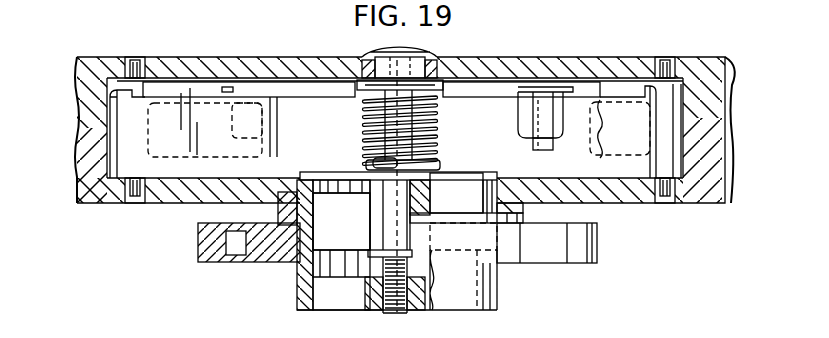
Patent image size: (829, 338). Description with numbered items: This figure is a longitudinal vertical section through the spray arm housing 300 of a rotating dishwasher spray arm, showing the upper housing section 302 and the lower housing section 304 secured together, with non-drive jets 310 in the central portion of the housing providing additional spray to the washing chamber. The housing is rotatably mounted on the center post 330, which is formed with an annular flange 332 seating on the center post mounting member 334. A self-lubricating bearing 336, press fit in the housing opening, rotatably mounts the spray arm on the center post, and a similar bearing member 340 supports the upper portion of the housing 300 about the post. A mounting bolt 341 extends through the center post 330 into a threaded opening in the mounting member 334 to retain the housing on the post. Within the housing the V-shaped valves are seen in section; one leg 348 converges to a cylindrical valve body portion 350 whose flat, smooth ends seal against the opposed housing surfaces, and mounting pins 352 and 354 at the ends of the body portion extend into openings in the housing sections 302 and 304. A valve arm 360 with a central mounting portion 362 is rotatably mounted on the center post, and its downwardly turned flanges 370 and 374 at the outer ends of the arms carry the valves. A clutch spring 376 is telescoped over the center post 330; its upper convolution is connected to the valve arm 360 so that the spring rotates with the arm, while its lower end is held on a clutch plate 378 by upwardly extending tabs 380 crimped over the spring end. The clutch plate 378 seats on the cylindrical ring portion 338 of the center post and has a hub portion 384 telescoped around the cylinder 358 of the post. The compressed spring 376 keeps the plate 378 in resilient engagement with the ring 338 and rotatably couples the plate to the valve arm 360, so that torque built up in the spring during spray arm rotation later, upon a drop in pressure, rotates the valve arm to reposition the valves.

The spray arm housing 300 is at (504, 45).
The upper housing section 302 is at (103, 57).
The lower housing section 304 is at (78, 198).
The non-drive jets 310 is at (293, 57).
The center post 330 is at (370, 212).
The annular flange 332 is at (277, 211).
The center post mounting member 334 is at (215, 263).
The self-lubricating bearing 336 is at (297, 178).
The cylindrical ring portion 338 is at (305, 205).
The bearing member 340 is at (357, 90).
The mounting bolt 341 is at (420, 47).
The valve leg 348 is at (296, 134).
The cylindrical valve body portion 350 is at (140, 156).
The mounting pin 352 is at (134, 62).
The mounting pin 354 is at (128, 200).
The cylinder 358 is at (415, 228).
The valve arm 360 is at (335, 84).
The central mounting portion 362 is at (437, 98).
The downwardly turned flange 370 is at (565, 128).
The downwardly turned flange 374 is at (247, 88).
The clutch spring 376 is at (437, 138).
The clutch plate 378 is at (478, 165).
The tabs 380 is at (370, 163).
The hub portion 384 is at (383, 178).